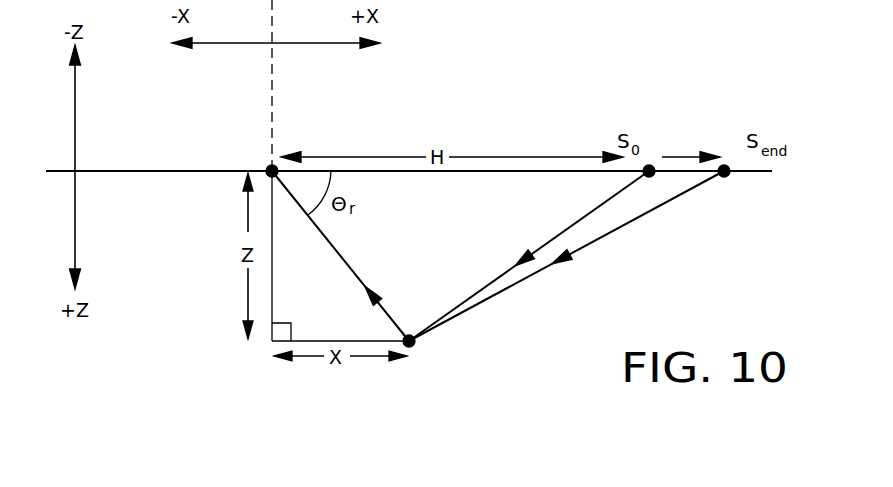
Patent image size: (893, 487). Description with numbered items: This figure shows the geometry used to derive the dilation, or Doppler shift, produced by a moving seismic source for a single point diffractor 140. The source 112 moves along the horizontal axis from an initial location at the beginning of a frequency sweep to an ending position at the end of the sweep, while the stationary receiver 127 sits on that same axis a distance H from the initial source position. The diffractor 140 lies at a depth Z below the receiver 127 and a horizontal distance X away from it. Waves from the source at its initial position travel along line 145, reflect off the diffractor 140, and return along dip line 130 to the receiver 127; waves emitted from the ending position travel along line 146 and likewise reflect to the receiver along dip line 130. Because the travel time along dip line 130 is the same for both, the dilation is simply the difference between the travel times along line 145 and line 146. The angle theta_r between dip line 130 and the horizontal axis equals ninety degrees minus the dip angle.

The source 112 is at (729, 162).
The receiver 127 is at (271, 164).
The dip line 130 is at (347, 260).
The diffractor 140 is at (418, 344).
The line 145 is at (578, 220).
The line 146 is at (573, 254).